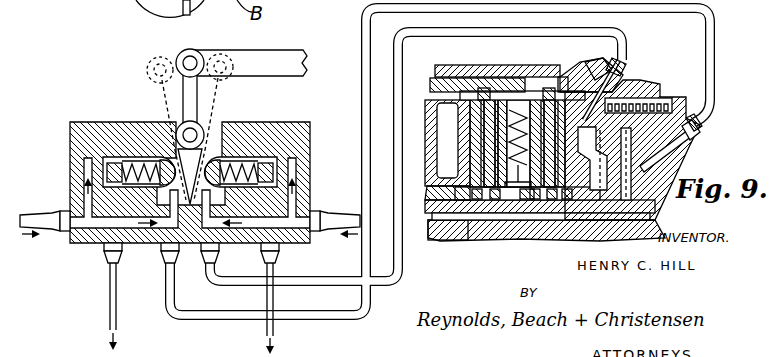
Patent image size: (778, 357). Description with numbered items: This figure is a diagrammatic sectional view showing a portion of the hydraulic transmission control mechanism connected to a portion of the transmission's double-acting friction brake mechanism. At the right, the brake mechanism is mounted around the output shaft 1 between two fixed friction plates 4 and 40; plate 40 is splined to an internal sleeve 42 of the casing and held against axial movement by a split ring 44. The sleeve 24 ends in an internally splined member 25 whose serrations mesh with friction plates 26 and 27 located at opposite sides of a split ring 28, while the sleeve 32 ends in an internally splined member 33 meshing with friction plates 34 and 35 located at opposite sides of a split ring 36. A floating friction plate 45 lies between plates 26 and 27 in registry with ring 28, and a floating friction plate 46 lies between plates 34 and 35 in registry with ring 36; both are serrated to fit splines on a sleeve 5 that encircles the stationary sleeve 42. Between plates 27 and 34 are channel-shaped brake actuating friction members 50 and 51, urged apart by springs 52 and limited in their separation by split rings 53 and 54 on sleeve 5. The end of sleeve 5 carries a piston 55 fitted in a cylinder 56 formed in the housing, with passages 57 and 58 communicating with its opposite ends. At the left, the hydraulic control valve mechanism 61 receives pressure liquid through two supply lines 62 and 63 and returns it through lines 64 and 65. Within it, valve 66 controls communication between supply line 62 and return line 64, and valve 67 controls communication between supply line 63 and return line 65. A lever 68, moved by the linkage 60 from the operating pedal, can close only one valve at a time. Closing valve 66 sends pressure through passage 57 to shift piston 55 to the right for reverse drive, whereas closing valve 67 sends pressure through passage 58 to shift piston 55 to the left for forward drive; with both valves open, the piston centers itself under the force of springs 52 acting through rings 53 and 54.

The output shaft 1 is at (480, 240).
The fixed friction plate 4 is at (607, 151).
The sleeve 5 is at (451, 192).
The sleeve 24 is at (432, 83).
The internally splined member 25 is at (462, 97).
The friction ring or plate 26 is at (473, 92).
The friction ring or plate 27 is at (500, 93).
The split ring 28 is at (484, 90).
The sleeve or tube 32 is at (448, 64).
The internally splined member 33 is at (618, 63).
The friction plate or ring 34 is at (533, 82).
The friction ring or plate 35 is at (573, 74).
The split ring 36 is at (560, 78).
The fixed friction plate 40 is at (452, 113).
The internal sleeve 42 is at (426, 212).
The split ring 44 is at (454, 240).
The floating friction plate 45 is at (481, 132).
The floating friction plate 46 is at (628, 92).
The brake actuating friction member 50 is at (504, 85).
The brake actuating friction member 51 is at (538, 92).
The spring 52 is at (521, 100).
The split ring 53 is at (487, 240).
The split ring 54 is at (527, 238).
The piston 55 is at (667, 167).
The cylinder 56 is at (670, 121).
The passage 57 is at (622, 79).
The passage 58 is at (685, 143).
The linkage 60 is at (276, 57).
The hydraulic control valve mechanism 61 is at (280, 125).
The supply line 62 is at (52, 212).
The supply line 63 is at (337, 205).
The return line 64 is at (108, 297).
The return line 65 is at (276, 333).
The valve 66 is at (131, 155).
The valve 67 is at (228, 158).
The lever 68 is at (182, 89).